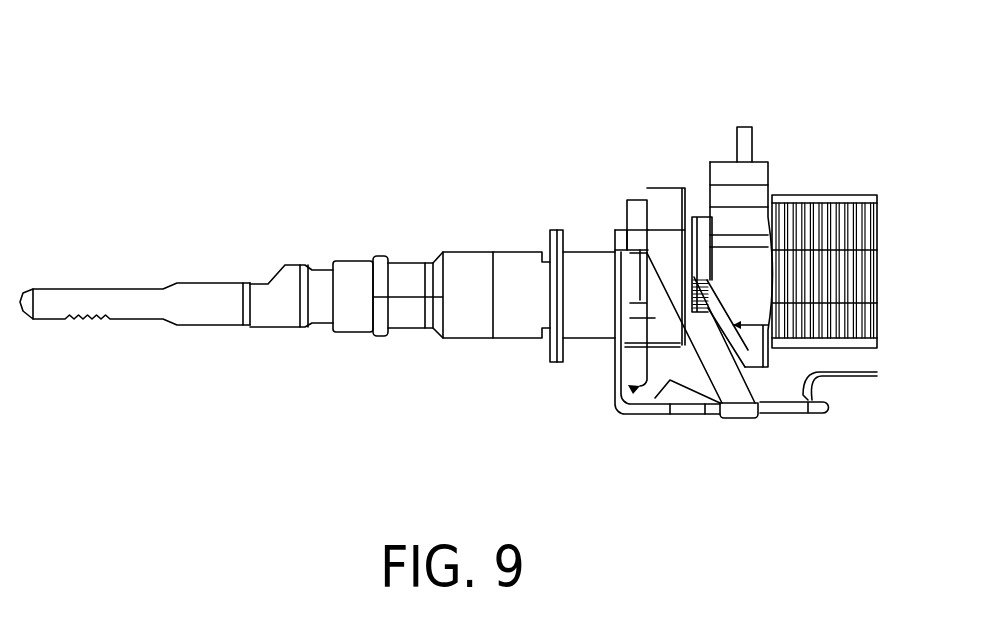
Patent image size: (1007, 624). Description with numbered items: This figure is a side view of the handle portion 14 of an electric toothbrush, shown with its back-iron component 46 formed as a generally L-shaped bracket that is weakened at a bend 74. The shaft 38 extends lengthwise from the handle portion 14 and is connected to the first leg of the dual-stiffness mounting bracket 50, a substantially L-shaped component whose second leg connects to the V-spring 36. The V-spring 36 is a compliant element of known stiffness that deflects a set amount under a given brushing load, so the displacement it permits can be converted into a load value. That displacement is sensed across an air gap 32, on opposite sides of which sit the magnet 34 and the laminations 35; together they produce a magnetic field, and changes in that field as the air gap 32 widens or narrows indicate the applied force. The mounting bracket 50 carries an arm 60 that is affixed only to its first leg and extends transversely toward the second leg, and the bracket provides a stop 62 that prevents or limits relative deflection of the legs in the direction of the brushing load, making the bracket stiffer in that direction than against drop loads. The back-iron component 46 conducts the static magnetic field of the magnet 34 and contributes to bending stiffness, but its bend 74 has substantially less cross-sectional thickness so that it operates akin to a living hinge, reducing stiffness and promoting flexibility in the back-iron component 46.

The handle portion 14 is at (120, 88).
The shaft 38 is at (188, 295).
The dual-stiffness mounting bracket 50 is at (613, 247).
The back-iron component 46 is at (638, 200).
The magnet 34 is at (662, 205).
The air gap 32 is at (688, 193).
The laminations 35 is at (700, 235).
The arm 60 is at (740, 413).
The V-spring 36 is at (792, 393).
The bend 74 is at (630, 388).
The stop 62 is at (709, 448).